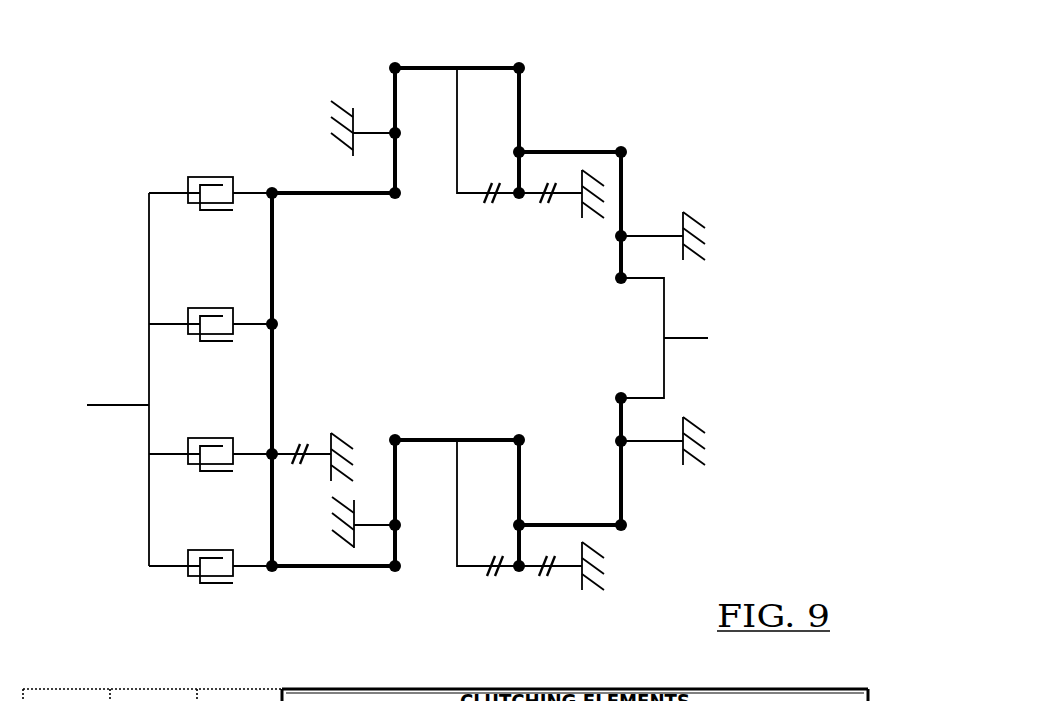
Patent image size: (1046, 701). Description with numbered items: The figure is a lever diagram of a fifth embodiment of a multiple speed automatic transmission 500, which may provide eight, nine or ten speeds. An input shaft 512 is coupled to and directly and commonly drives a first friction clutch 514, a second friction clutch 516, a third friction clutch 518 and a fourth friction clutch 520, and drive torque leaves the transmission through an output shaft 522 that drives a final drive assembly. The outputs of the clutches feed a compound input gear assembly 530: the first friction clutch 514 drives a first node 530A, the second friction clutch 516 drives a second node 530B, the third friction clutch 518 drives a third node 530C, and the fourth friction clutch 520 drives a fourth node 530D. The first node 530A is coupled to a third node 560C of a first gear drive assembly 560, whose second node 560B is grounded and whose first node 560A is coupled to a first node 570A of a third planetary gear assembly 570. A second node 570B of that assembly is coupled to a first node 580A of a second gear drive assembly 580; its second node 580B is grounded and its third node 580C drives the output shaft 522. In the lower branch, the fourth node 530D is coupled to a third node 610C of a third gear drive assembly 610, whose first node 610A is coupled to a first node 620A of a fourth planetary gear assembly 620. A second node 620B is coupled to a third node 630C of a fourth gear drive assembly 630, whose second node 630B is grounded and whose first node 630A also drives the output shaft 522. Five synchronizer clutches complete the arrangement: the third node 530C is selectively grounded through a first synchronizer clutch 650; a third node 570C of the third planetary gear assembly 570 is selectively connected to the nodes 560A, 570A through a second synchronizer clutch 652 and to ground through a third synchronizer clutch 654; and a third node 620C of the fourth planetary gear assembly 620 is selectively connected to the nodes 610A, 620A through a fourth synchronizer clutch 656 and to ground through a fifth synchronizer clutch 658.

The multiple speed automatic transmission 500 is at (750, 91).
The input shaft 512 is at (100, 408).
The first friction clutch 514 is at (205, 184).
The second friction clutch 516 is at (205, 315).
The third friction clutch 518 is at (204, 472).
The fourth friction clutch 520 is at (205, 584).
The output shaft 522 is at (691, 337).
The compound input gear assembly 530 is at (254, 149).
The first node of compound input gear assembly 530A is at (278, 198).
The second node of compound input gear assembly 530B is at (278, 329).
The third node of compound input gear assembly 530C is at (268, 449).
The fourth node of compound input gear assembly 530D is at (271, 573).
The first gear drive assembly 560 is at (370, 57).
The first node of first gear drive assembly 560A is at (390, 70).
The second node of first gear drive assembly 560B is at (390, 138).
The third node of first gear drive assembly 560C is at (396, 200).
The third planetary gear assembly 570 is at (543, 52).
The first node of third planetary gear assembly 570A is at (524, 70).
The second node of third planetary gear assembly 570B is at (523, 149).
The third node of third planetary gear assembly 570C is at (518, 200).
The second gear drive assembly 580 is at (645, 131).
The first node of second gear drive assembly 580A is at (626, 153).
The second node of second gear drive assembly 580B is at (625, 232).
The third node of second gear drive assembly 580C is at (621, 285).
The third gear drive assembly 610 is at (406, 406).
The first node of third gear drive assembly 610A is at (399, 436).
The third node of third gear drive assembly 610C is at (394, 572).
The fourth planetary gear assembly 620 is at (521, 406).
The first node of fourth planetary gear assembly 620A is at (524, 436).
The second node of fourth planetary gear assembly 620B is at (526, 523).
The third node of fourth planetary gear assembly 620C is at (521, 573).
The fourth gear drive assembly 630 is at (647, 561).
The first node of fourth gear drive assembly 630A is at (620, 393).
The second node of fourth gear drive assembly 630B is at (627, 447).
The third node of fourth gear drive assembly 630C is at (628, 527).
The first synchronizer clutch 650 is at (303, 447).
The second synchronizer clutch 652 is at (482, 197).
The third synchronizer clutch 654 is at (551, 199).
The fourth synchronizer clutch 656 is at (485, 569).
The fifth synchronizer clutch 658 is at (553, 569).